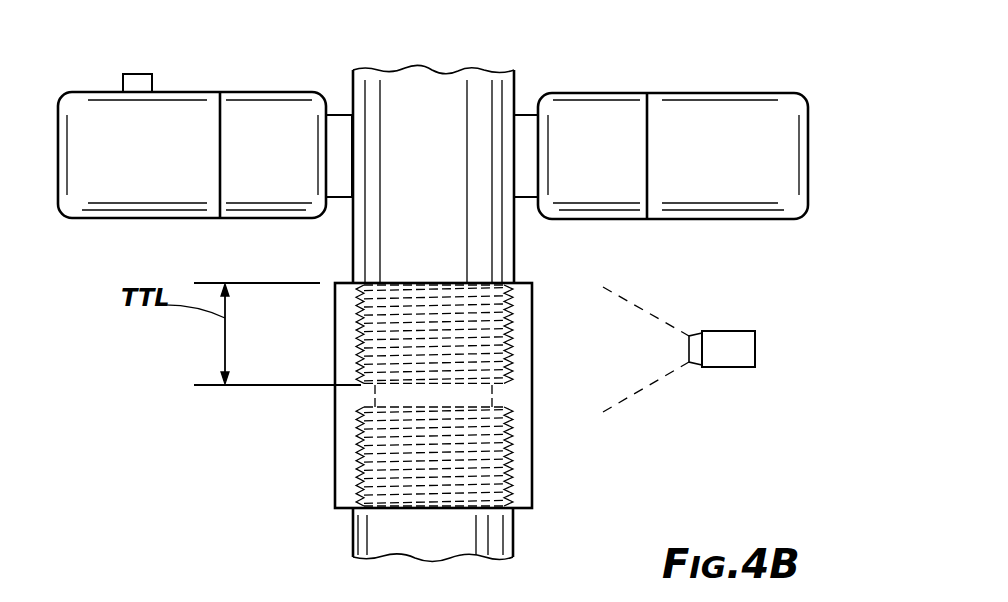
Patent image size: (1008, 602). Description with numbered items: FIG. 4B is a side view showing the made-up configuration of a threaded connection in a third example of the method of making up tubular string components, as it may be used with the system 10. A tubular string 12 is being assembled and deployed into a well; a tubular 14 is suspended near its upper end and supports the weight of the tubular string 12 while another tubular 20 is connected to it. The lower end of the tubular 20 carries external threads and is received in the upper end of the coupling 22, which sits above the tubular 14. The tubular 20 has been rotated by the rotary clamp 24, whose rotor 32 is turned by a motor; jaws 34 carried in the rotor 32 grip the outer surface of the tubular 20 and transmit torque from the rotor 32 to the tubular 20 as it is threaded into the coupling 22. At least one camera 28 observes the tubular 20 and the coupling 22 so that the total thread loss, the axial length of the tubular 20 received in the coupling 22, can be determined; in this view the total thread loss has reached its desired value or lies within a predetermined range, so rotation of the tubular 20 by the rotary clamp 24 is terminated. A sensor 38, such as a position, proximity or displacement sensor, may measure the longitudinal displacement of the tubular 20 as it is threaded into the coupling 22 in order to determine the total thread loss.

The system 10 is at (812, 66).
The tubular string 12 is at (533, 490).
The tubular 14 is at (353, 532).
The tubular 20 is at (517, 80).
The coupling 22 is at (335, 447).
The rotary clamp 24 is at (99, 92).
The camera 28 is at (736, 367).
The rotor 32 is at (285, 92).
The jaws 34 is at (340, 112).
The sensor 38 is at (153, 83).